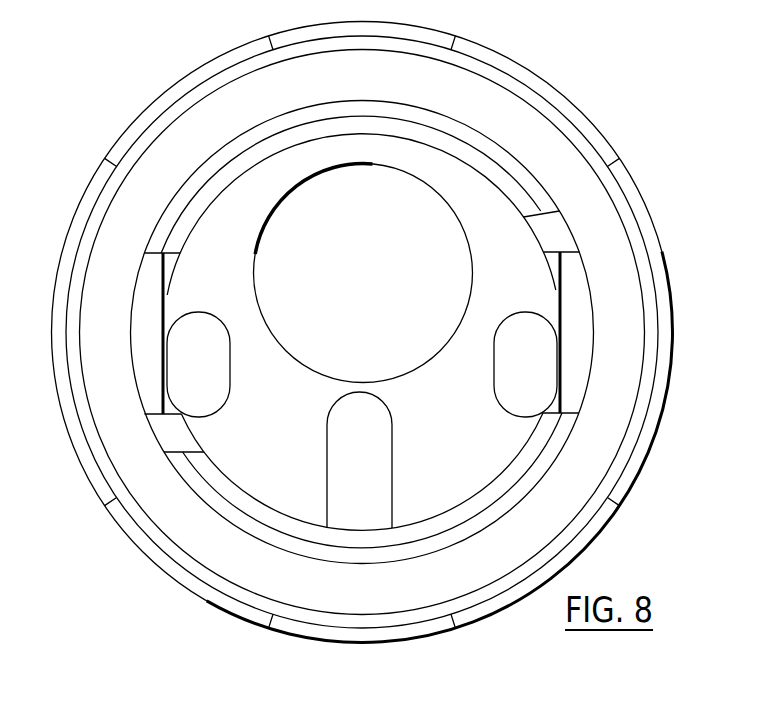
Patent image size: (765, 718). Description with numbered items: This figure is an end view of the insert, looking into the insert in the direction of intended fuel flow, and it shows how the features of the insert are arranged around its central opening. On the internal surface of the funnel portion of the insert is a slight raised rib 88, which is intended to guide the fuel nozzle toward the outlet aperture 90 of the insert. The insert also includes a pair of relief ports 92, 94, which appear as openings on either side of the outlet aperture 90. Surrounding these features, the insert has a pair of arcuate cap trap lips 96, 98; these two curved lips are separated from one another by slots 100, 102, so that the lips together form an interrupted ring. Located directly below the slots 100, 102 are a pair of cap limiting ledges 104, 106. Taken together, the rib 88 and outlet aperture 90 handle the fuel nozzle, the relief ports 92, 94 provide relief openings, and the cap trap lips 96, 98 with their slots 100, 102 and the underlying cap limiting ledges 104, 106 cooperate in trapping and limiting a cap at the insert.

The raised rib 88 is at (368, 459).
The outlet aperture 90 is at (368, 164).
The relief port 92 is at (208, 366).
The relief port 94 is at (513, 360).
The arcuate cap trap lip 96 is at (267, 157).
The arcuate cap trap lip 98 is at (253, 522).
The slot 100 is at (175, 282).
The slot 102 is at (557, 284).
The cap limiting ledge 104 is at (570, 287).
The cap limiting ledge 106 is at (134, 304).